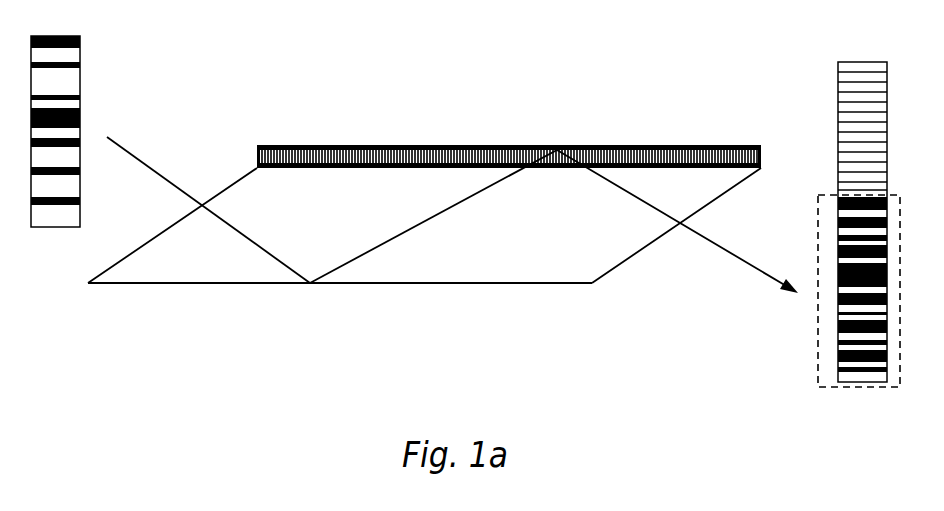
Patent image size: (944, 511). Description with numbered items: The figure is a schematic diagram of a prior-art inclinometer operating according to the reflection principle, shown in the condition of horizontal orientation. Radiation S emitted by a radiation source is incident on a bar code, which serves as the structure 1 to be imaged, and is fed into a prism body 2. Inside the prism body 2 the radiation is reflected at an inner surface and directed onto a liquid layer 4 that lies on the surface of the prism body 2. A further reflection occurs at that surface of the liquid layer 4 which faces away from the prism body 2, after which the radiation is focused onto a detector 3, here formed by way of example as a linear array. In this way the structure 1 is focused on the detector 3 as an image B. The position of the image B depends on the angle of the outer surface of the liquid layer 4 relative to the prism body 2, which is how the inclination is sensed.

The structure 1 is at (104, 123).
The prism body 2 is at (424, 257).
The detector 3 is at (796, 203).
The liquid layer 4 is at (509, 130).
The radiation S is at (452, 201).
The image B is at (808, 299).